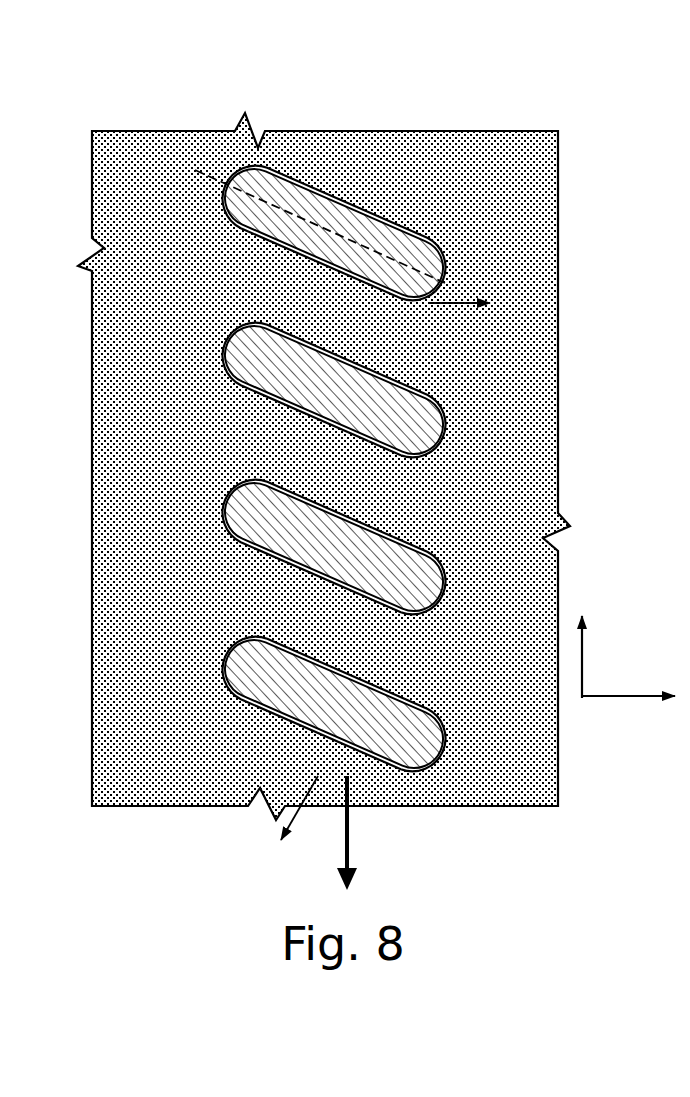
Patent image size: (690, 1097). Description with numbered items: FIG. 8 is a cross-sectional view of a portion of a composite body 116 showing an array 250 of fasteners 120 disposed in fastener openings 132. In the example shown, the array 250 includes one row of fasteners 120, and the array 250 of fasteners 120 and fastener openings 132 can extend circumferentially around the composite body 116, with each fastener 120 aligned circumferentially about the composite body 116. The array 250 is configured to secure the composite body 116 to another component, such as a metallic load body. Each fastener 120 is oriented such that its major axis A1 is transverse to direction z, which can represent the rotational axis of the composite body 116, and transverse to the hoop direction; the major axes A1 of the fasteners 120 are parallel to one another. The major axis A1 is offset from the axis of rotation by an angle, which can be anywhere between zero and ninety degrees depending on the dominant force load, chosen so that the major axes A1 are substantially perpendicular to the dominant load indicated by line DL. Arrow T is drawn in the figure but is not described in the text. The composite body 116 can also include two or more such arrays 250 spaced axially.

The composite body 116 is at (160, 607).
The fastener 120 is at (353, 220).
The fastener opening 132 is at (412, 220).
The array 250 is at (205, 260).
The major axis A1 is at (202, 168).
The dominant load line DL is at (282, 809).
The travel direction T is at (343, 830).
The direction z is at (628, 680).